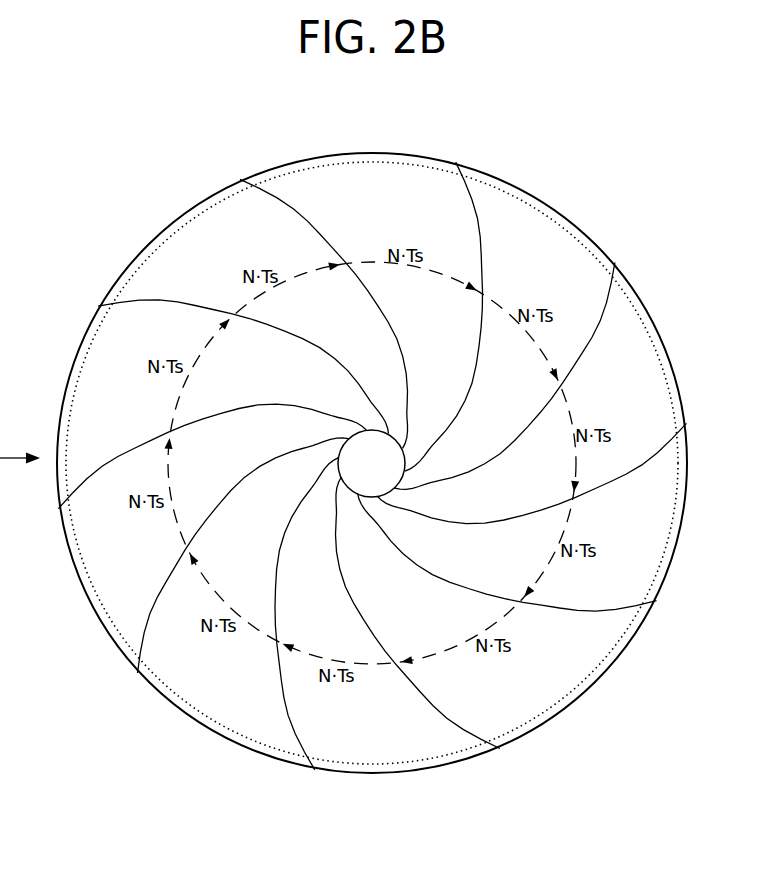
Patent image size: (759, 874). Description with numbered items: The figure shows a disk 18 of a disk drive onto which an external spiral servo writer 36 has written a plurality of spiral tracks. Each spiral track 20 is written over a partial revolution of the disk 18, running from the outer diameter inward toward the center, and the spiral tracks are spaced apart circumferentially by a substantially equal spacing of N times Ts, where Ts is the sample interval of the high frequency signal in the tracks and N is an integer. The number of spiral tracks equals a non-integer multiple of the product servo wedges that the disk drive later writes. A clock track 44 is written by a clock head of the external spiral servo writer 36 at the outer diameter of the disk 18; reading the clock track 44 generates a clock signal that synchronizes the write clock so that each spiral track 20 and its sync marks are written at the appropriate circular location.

The disk 18 is at (578, 205).
The spiral track 20 is at (377, 470).
The external spiral servo writer 36 is at (20, 310).
The clock track 44 is at (667, 553).